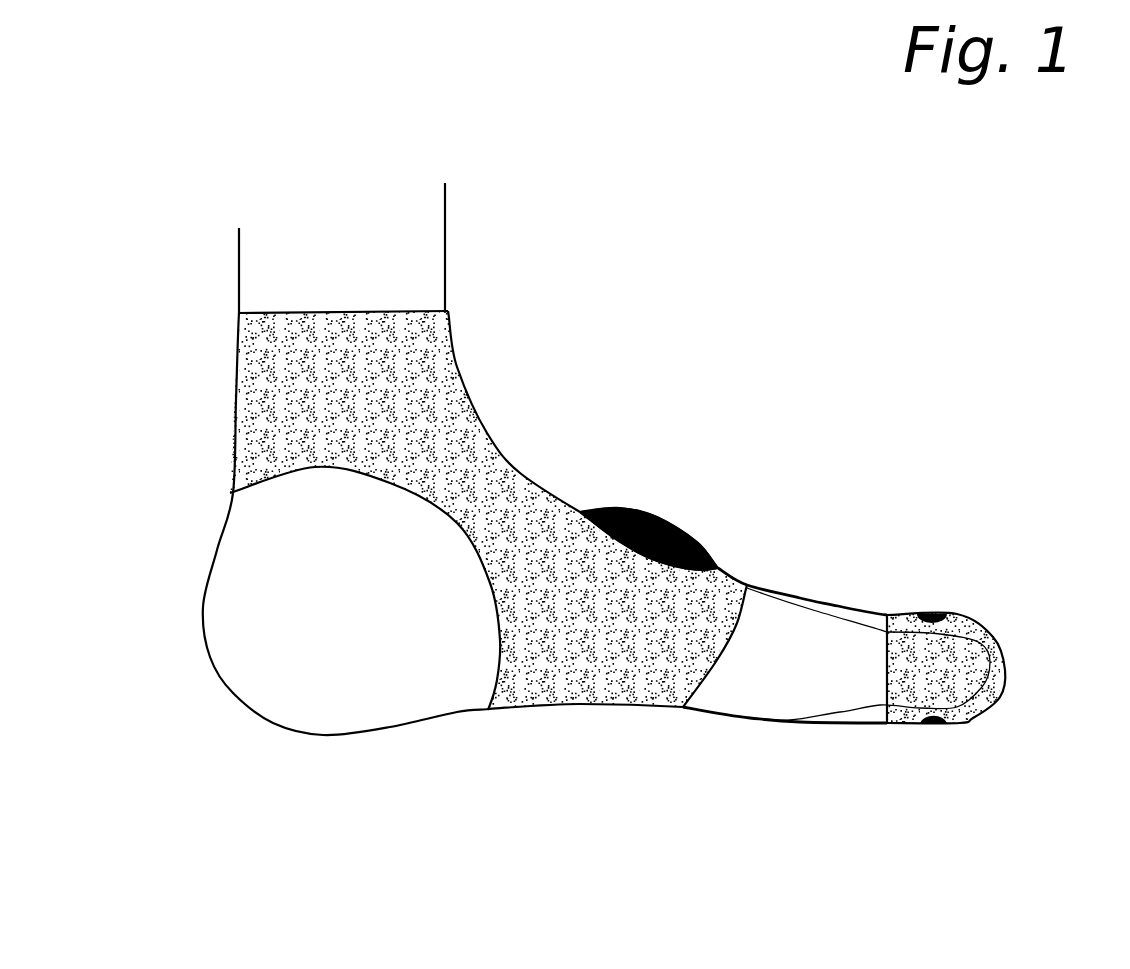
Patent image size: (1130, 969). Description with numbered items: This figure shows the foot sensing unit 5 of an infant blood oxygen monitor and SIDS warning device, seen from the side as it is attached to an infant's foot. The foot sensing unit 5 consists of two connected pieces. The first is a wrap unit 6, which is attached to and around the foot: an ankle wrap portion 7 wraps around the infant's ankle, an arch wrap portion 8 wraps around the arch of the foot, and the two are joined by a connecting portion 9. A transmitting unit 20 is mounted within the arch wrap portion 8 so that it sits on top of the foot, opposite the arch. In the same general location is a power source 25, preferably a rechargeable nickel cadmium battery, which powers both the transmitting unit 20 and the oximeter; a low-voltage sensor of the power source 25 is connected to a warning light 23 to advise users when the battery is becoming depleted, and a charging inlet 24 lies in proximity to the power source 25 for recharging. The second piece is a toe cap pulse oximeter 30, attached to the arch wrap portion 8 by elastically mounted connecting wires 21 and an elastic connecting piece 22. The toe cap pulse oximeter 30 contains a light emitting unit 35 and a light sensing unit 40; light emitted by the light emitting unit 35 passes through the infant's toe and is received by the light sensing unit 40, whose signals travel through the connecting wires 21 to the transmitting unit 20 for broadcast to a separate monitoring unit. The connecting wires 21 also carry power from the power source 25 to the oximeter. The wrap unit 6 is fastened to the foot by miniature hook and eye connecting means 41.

The foot sensing unit 5 is at (617, 767).
The wrap unit 6 is at (537, 438).
The ankle wrap portion 7 is at (435, 353).
The arch wrap portion 8 is at (562, 580).
The connecting portion 9 is at (482, 452).
The transmitting unit 20 is at (678, 517).
The connecting wires 21 is at (837, 607).
The elastic connecting piece 22 is at (750, 718).
The warning light 23 is at (642, 507).
The charging inlet 24 is at (607, 505).
The power source 25 is at (718, 532).
The toe cap pulse oximeter 30 is at (992, 633).
The light emitting unit 35 is at (938, 610).
The light sensing unit 40 is at (943, 723).
The hook and eye connecting means 41 is at (243, 433).